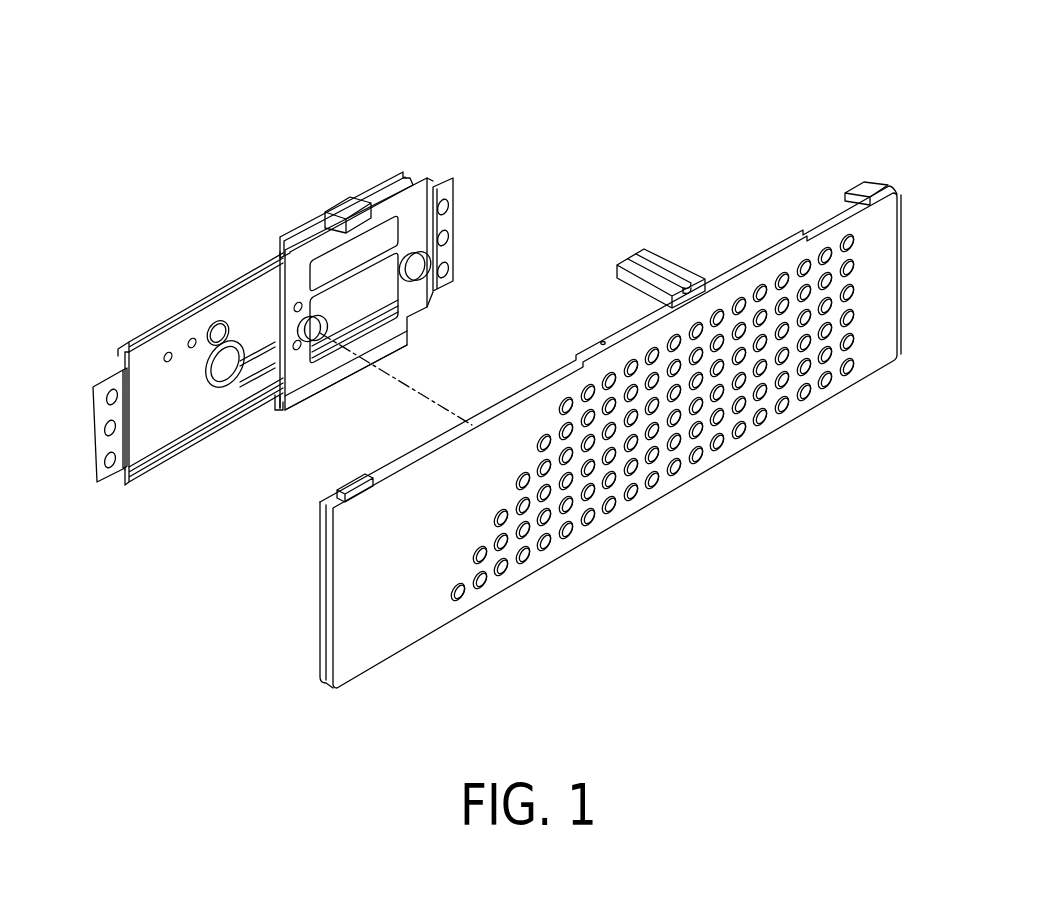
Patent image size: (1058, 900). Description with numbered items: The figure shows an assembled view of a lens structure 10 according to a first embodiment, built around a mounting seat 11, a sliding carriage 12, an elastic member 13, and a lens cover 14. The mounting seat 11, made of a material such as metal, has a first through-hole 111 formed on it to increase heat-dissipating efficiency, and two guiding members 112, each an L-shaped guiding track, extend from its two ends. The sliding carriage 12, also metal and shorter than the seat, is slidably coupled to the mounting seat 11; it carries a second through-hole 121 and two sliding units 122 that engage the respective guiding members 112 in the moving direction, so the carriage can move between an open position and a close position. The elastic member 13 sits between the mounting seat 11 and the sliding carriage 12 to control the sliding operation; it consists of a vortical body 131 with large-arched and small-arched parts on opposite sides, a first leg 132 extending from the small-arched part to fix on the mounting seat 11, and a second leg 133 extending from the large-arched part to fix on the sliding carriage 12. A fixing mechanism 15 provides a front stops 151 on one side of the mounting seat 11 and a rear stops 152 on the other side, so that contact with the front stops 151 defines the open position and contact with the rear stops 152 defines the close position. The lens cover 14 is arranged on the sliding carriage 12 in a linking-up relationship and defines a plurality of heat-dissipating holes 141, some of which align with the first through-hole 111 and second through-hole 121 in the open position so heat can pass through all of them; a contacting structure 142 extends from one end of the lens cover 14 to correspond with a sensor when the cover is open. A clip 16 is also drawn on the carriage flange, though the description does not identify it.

The lens structure 10 is at (268, 27).
The mounting seat 11 is at (162, 382).
The first through-hole 111 is at (257, 306).
The guiding member 112 is at (177, 317).
The sliding carriage 12 is at (338, 270).
The second through-hole 121 is at (365, 255).
The sliding unit 122 is at (383, 177).
The elastic member 13 is at (290, 412).
The vortical body 131 is at (222, 382).
The first leg 132 is at (205, 352).
The second leg 133 is at (262, 405).
The lens cover 14 is at (584, 318).
The heat-dissipating holes 141 is at (742, 434).
The contacting structure 142 is at (668, 262).
The fixing mechanism 15 is at (265, 267).
The front stops 151 is at (437, 185).
The rear stops 152 is at (113, 372).
The clip 16 is at (329, 203).